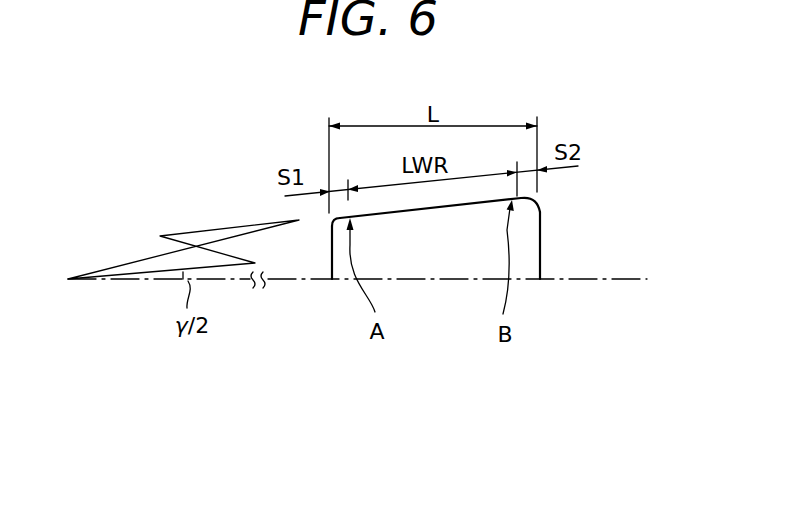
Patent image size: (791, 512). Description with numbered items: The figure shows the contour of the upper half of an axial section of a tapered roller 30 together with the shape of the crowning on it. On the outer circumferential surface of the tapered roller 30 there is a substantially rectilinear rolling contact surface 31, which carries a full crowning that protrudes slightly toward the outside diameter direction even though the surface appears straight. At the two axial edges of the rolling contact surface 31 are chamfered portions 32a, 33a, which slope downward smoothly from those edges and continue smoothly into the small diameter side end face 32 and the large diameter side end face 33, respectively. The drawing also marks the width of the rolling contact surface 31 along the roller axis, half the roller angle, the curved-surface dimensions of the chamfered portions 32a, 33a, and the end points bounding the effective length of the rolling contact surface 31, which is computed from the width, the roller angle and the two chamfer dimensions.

The tapered roller 30 is at (588, 180).
The rolling contact surface 31 is at (440, 208).
The small diameter side end face 32 is at (332, 259).
The chamfered portion 32a is at (327, 217).
The large diameter side end face 33 is at (541, 232).
The chamfered portion 33a is at (537, 199).